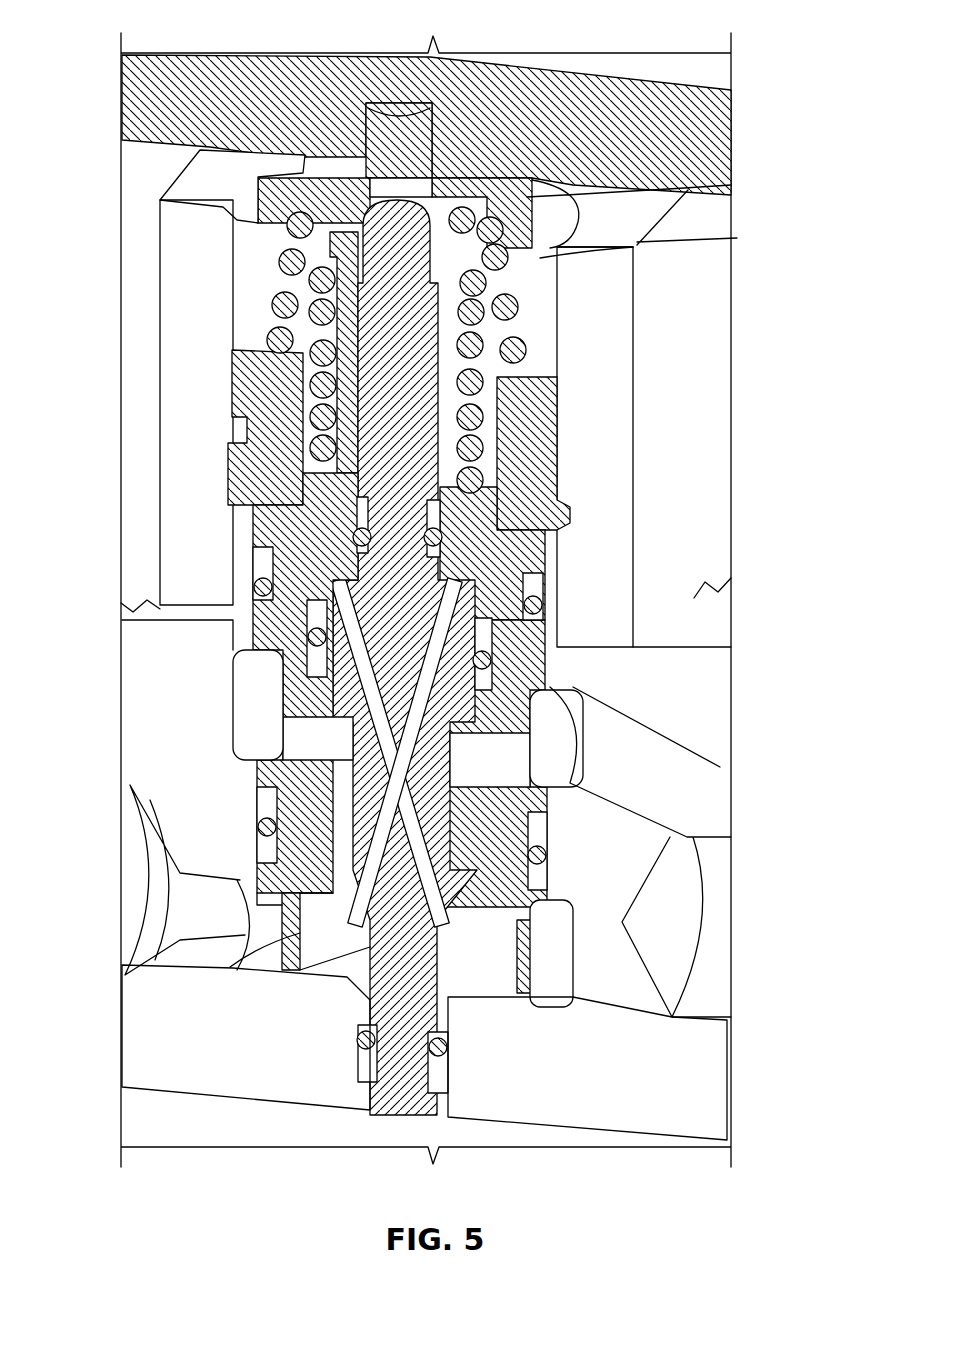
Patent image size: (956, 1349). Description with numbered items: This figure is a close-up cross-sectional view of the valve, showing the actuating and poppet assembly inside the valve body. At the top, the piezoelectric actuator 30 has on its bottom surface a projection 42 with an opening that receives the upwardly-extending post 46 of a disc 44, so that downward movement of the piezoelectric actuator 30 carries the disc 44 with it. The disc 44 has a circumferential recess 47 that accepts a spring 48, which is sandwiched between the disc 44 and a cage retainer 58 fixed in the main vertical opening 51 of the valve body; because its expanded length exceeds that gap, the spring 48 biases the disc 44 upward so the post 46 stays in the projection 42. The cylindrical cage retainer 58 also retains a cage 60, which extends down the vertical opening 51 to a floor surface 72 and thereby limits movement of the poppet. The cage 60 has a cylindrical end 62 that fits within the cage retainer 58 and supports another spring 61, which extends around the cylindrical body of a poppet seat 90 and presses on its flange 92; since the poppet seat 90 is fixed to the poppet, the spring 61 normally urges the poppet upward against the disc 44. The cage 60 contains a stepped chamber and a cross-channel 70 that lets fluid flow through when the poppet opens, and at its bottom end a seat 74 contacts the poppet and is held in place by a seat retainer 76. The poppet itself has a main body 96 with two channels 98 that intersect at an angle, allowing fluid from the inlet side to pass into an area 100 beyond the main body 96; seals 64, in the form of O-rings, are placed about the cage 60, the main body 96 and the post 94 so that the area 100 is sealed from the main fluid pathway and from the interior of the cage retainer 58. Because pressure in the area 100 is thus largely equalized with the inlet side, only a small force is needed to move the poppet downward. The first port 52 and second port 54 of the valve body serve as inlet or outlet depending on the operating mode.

The piezoelectric actuator 30 is at (725, 102).
The projection 42 is at (310, 160).
The disc 44 is at (520, 210).
The post 46 is at (405, 140).
The circumferential recess 47 is at (300, 240).
The spring 48 is at (295, 305).
The main vertical opening 51 is at (230, 172).
The first port 52 is at (175, 945).
The second port 54 is at (730, 768).
The cage retainer 58 is at (540, 447).
The cage 60 is at (510, 560).
The spring 61 is at (470, 345).
The cylindrical end 62 is at (470, 513).
The seals 64 is at (358, 537).
The cross-channel 70 is at (305, 735).
The floor surface 72 is at (477, 988).
The seat 74 is at (320, 847).
The seat retainer 76 is at (320, 895).
The poppet seat 90 is at (265, 340).
The flange 92 is at (640, 243).
The post 94 is at (405, 198).
The main body 96 is at (347, 703).
The channels 98 is at (357, 668).
The area 100 is at (640, 634).